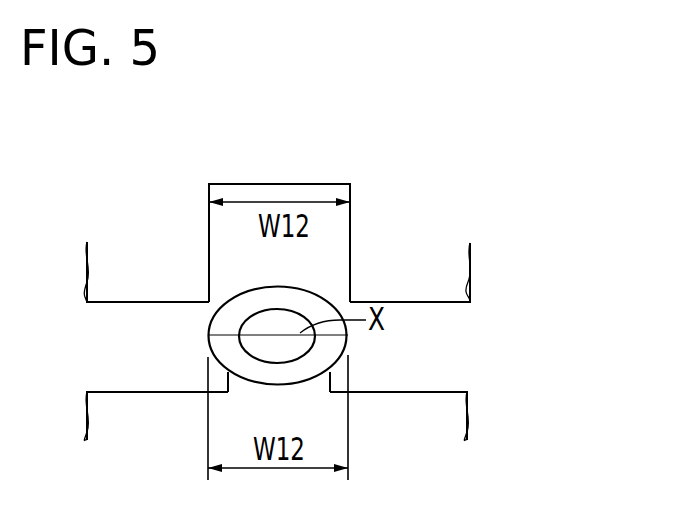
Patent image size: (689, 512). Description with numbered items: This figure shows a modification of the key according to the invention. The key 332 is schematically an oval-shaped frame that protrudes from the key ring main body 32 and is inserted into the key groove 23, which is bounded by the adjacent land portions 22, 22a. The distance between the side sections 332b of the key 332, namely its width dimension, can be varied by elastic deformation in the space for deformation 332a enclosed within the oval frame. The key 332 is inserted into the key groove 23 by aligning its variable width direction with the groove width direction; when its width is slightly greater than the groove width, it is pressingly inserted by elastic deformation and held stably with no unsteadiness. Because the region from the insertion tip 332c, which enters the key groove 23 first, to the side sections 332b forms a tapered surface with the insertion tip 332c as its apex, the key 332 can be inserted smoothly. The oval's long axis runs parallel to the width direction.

The key groove 23 is at (289, 196).
The land portions 22 is at (354, 281).
The land portion 22a is at (449, 304).
The key ring main body 32 is at (157, 445).
The key 332 is at (352, 355).
The space for deformation 332a is at (284, 320).
The side sections 332b is at (207, 334).
The insertion tip 332c is at (270, 287).